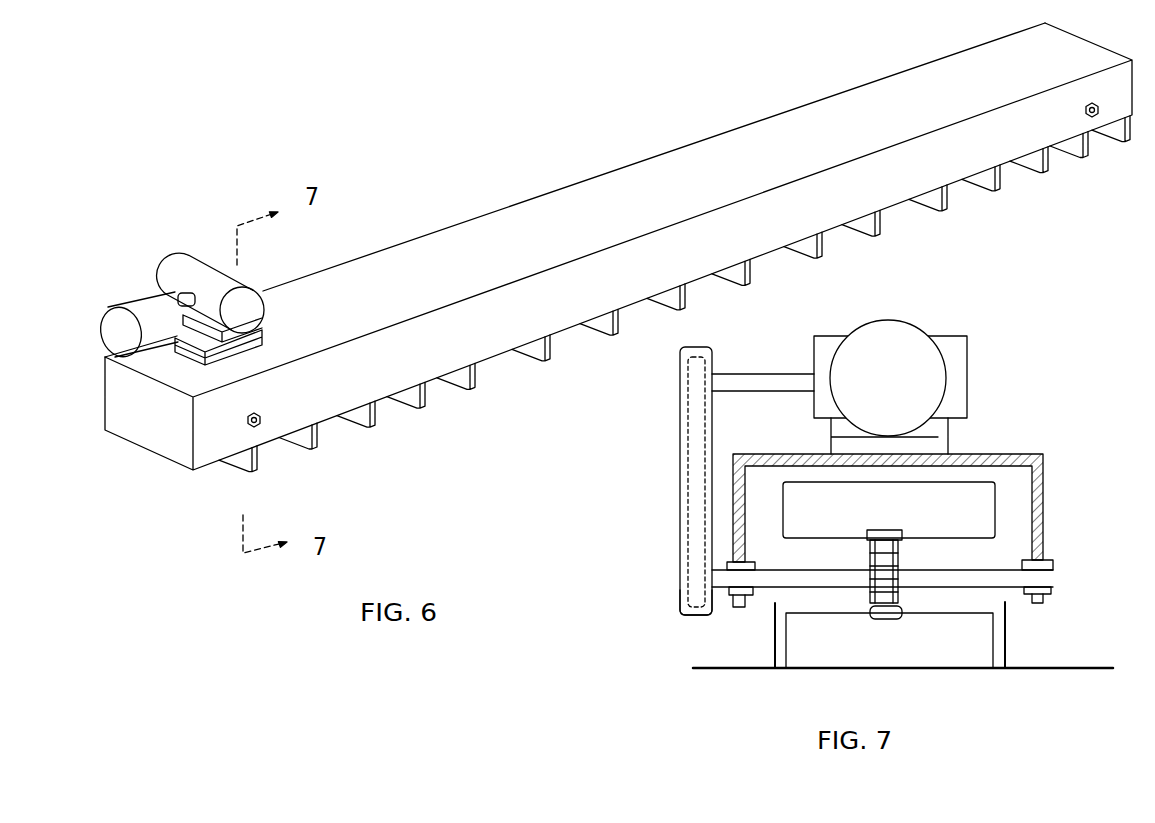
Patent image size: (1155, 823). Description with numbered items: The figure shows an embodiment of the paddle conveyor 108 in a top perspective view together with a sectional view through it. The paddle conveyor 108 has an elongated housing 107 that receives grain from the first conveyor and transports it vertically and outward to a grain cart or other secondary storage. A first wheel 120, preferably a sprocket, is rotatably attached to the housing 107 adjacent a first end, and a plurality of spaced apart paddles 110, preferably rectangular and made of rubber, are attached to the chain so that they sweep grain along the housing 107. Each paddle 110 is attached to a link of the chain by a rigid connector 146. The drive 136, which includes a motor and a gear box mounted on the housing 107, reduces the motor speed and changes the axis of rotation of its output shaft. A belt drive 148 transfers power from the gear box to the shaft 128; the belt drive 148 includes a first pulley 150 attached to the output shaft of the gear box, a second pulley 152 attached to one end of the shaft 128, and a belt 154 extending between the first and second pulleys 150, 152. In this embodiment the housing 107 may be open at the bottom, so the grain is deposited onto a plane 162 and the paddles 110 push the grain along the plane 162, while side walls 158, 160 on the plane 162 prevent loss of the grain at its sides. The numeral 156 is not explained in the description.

In FIG. 6, the housing 107 is at (652, 190).
In FIG. 6, the paddle conveyor 108 is at (498, 228).
In FIG. 6, the paddle 110 is at (367, 425).
In FIG. 7, the paddle 110 is at (922, 640).
In FIG. 6, the first wheel 120 is at (1090, 117).
In FIG. 6, the shaft 128 is at (247, 423).
In FIG. 7, the shaft 128 is at (1033, 573).
In FIG. 6, the drive 136 is at (200, 270).
In FIG. 7, the drive 136 is at (910, 383).
In FIG. 7, the rigid connector 146 is at (887, 612).
In FIG. 7, the belt drive 148 is at (683, 464).
In FIG. 7, the first pulley 150 is at (695, 386).
In FIG. 7, the second pulley 152 is at (687, 582).
In FIG. 7, the belt 154 is at (693, 483).
In FIG. 7, the channel 156 is at (939, 504).
In FIG. 7, the side wall 158 is at (773, 655).
In FIG. 7, the side wall 160 is at (1005, 655).
In FIG. 7, the plane 162 is at (802, 670).